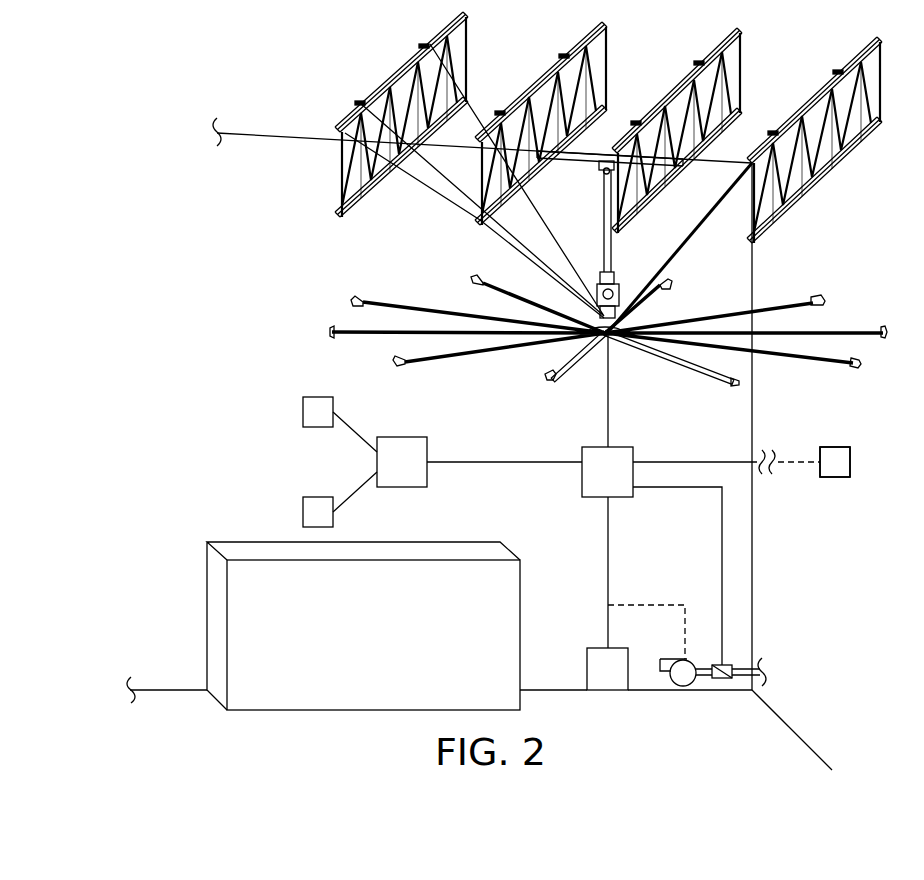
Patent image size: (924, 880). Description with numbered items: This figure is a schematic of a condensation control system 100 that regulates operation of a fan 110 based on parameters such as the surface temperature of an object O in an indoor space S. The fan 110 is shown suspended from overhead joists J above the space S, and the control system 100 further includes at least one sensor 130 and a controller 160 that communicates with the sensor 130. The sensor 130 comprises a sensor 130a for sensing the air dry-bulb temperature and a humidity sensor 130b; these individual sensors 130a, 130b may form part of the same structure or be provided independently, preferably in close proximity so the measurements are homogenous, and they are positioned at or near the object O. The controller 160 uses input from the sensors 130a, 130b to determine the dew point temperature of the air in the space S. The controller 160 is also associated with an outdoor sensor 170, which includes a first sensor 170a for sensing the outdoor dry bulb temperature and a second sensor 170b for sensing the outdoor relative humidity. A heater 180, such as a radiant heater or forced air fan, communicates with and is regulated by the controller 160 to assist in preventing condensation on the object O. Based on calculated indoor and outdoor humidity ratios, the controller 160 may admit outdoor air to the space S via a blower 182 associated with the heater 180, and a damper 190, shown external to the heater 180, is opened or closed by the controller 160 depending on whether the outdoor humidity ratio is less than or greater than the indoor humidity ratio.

The joists J is at (612, 70).
The indoor space S is at (178, 378).
The object O is at (363, 641).
The control system 100 is at (281, 329).
The fan 110 is at (664, 309).
The sensor 130 is at (427, 442).
The sensor 130a is at (303, 407).
The humidity sensor 130b is at (303, 512).
The controller 160 is at (628, 447).
The outdoor sensor 170 is at (838, 447).
The first sensor 170a is at (835, 477).
The second sensor 170b is at (835, 462).
The heater 180 is at (608, 690).
The blower 182 is at (685, 690).
The damper 190 is at (725, 680).